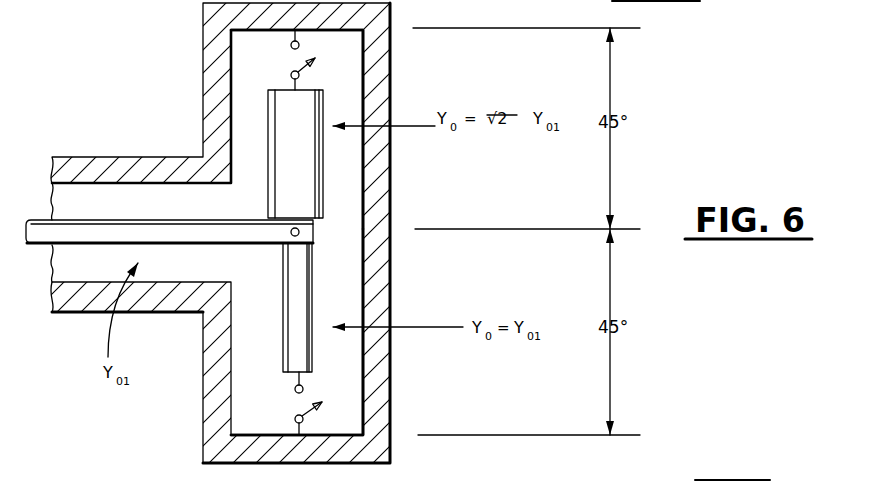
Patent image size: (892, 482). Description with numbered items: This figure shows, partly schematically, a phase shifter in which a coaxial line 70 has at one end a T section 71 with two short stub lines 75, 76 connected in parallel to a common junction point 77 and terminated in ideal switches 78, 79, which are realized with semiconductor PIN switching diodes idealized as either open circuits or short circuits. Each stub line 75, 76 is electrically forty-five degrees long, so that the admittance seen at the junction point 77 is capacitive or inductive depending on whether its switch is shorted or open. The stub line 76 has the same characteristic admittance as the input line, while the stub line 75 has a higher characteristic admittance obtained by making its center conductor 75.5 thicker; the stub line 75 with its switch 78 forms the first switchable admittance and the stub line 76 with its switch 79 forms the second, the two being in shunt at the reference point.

The coaxial line 70 is at (167, 135).
The T section 71 is at (405, 225).
The stub line 75 is at (347, 72).
The center conductor 75.5 is at (305, 108).
The stub line 76 is at (352, 353).
The junction point 77 is at (299, 232).
The switch 78 is at (300, 58).
The switch 79 is at (295, 408).